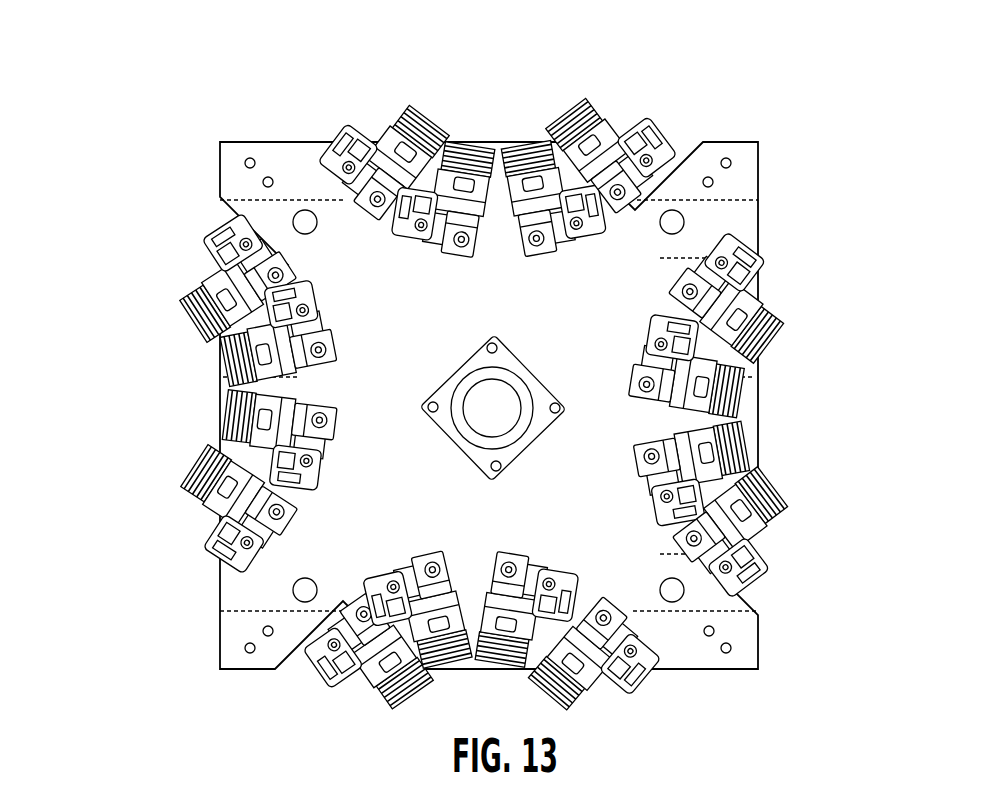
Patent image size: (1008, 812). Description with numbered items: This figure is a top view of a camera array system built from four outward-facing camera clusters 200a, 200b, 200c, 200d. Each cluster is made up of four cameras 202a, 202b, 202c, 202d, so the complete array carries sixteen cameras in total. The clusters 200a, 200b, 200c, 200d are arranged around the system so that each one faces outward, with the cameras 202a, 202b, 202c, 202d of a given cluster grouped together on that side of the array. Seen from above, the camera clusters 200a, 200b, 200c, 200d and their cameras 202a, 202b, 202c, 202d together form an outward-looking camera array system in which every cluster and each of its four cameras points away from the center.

The camera cluster 200a is at (769, 323).
The camera cluster 200b is at (512, 142).
The camera cluster 200c is at (283, 388).
The camera cluster 200d is at (467, 597).
The camera 202a is at (762, 298).
The camera 202b is at (747, 383).
The camera 202c is at (747, 440).
The camera 202d is at (790, 505).